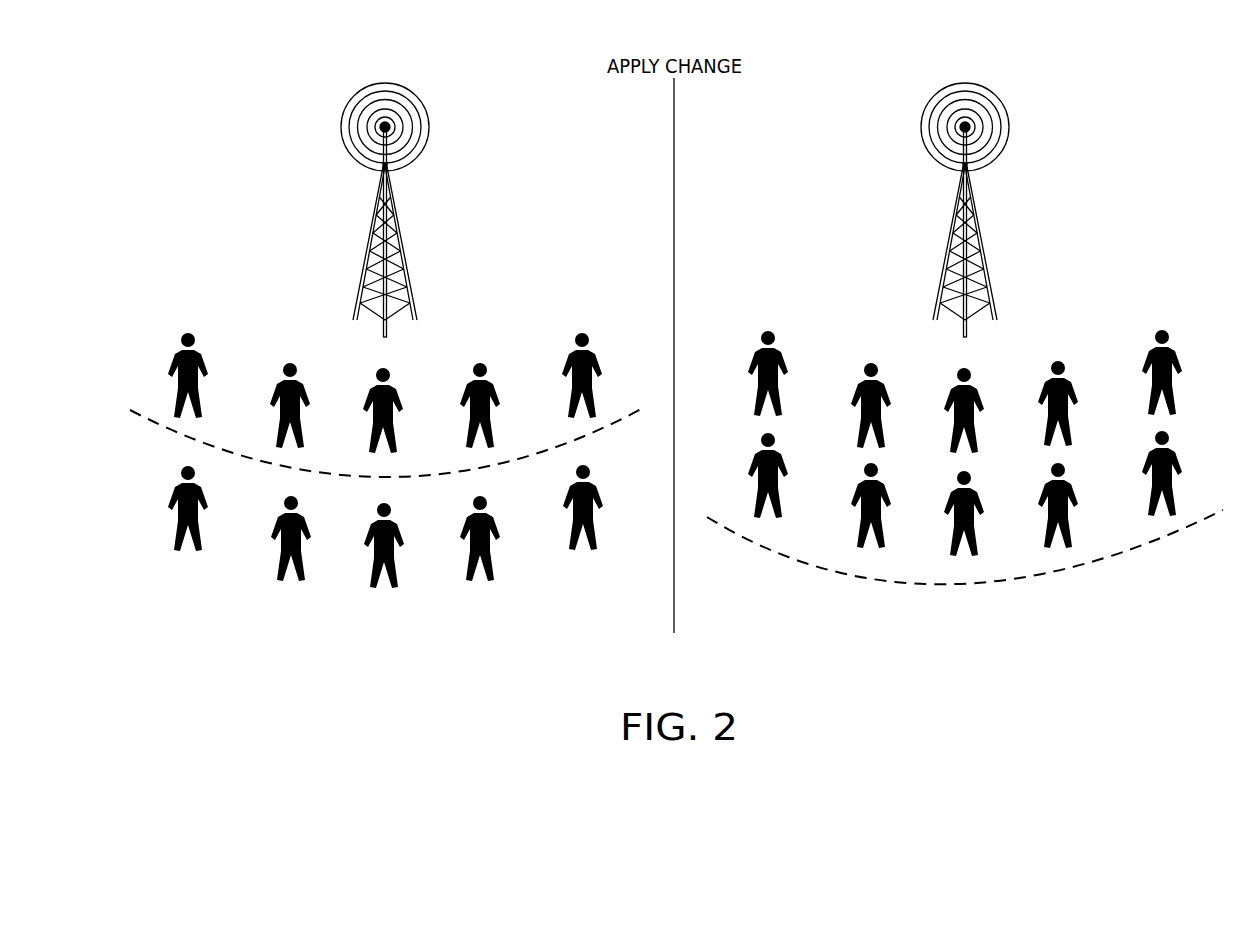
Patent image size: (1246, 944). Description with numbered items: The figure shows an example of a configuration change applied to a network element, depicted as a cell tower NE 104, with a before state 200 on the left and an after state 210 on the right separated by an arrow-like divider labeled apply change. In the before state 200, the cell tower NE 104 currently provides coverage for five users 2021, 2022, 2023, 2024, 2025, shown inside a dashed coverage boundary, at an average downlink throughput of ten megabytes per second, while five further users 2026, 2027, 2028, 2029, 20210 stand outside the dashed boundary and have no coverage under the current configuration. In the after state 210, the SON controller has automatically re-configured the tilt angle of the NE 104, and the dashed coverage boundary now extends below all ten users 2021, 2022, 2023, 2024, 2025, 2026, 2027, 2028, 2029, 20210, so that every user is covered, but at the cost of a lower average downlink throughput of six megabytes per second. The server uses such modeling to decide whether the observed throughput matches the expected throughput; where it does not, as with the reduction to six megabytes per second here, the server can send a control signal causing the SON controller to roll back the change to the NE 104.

The network element (NE) 104 is at (399, 246).
The user 2021 is at (175, 353).
The user 2022 is at (277, 383).
The user 2023 is at (370, 388).
The user 2024 is at (493, 384).
The user 2025 is at (595, 354).
The user 2026 is at (175, 486).
The user 2027 is at (278, 516).
The user 2028 is at (371, 523).
The user 2029 is at (493, 517).
The user 20210 is at (596, 486).
The network state before change 200 is at (356, 666).
The network state after change 210 is at (938, 664).